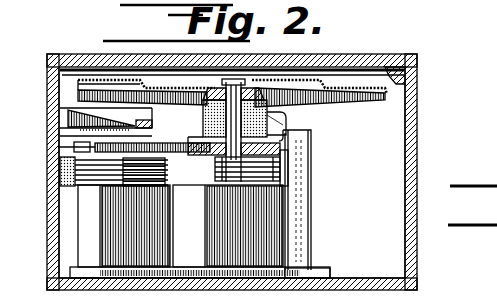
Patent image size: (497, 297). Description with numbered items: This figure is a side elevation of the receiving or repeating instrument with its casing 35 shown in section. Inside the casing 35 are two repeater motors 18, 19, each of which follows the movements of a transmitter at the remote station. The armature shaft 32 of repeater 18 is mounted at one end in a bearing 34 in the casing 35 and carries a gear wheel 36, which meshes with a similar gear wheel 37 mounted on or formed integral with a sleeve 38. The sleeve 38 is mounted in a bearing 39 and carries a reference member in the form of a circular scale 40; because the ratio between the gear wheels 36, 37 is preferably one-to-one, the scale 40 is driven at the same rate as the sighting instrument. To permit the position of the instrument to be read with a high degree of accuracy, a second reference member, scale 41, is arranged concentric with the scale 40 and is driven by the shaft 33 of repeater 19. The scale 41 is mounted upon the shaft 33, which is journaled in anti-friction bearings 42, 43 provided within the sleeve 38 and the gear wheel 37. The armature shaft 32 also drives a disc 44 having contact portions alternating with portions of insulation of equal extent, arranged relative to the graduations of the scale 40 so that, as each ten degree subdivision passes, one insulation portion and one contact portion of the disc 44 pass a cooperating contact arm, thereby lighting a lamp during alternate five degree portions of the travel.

The repeater motor 18 is at (124, 226).
The repeater motor 19 is at (200, 231).
The armature shaft 32 is at (147, 190).
The shaft 33 is at (238, 188).
The bearing 34 is at (133, 132).
The casing 35 is at (419, 147).
The gear wheel 36 is at (156, 170).
The gear wheel 37 is at (280, 150).
The sleeve 38 is at (262, 118).
The bearing 39 is at (268, 121).
The circular scale 40 is at (325, 107).
The scale 41 is at (310, 80).
The anti-friction bearing 42 is at (252, 80).
The anti-friction bearing 43 is at (225, 158).
The disc 44 is at (185, 143).